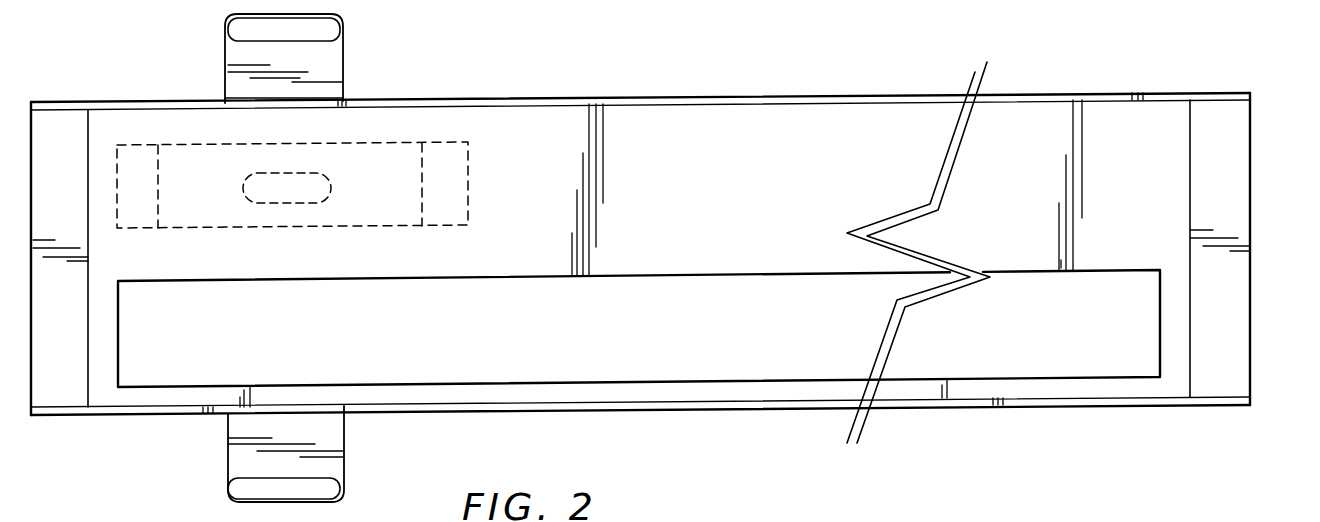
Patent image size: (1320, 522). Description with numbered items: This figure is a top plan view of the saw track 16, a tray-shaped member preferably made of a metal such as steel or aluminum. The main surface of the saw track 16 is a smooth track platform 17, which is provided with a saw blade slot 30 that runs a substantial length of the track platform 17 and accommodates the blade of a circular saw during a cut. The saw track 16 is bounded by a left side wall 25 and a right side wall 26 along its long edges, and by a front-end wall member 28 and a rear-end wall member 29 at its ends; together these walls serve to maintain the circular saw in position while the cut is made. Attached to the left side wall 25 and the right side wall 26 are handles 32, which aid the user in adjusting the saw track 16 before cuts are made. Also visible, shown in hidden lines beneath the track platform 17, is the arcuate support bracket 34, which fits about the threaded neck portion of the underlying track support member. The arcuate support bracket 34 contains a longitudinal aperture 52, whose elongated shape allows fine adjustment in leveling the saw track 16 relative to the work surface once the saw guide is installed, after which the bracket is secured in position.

The saw track 16 is at (838, 72).
The track platform 17 is at (540, 115).
The left side wall 25 is at (682, 97).
The right side wall 26 is at (686, 403).
The front-end wall member 28 is at (60, 397).
The rear-end wall member 29 is at (1234, 330).
The saw blade slot 30 is at (1060, 366).
The handles 32 is at (337, 43).
The arcuate support bracket 34 is at (183, 151).
The longitudinal aperture 52 is at (312, 193).